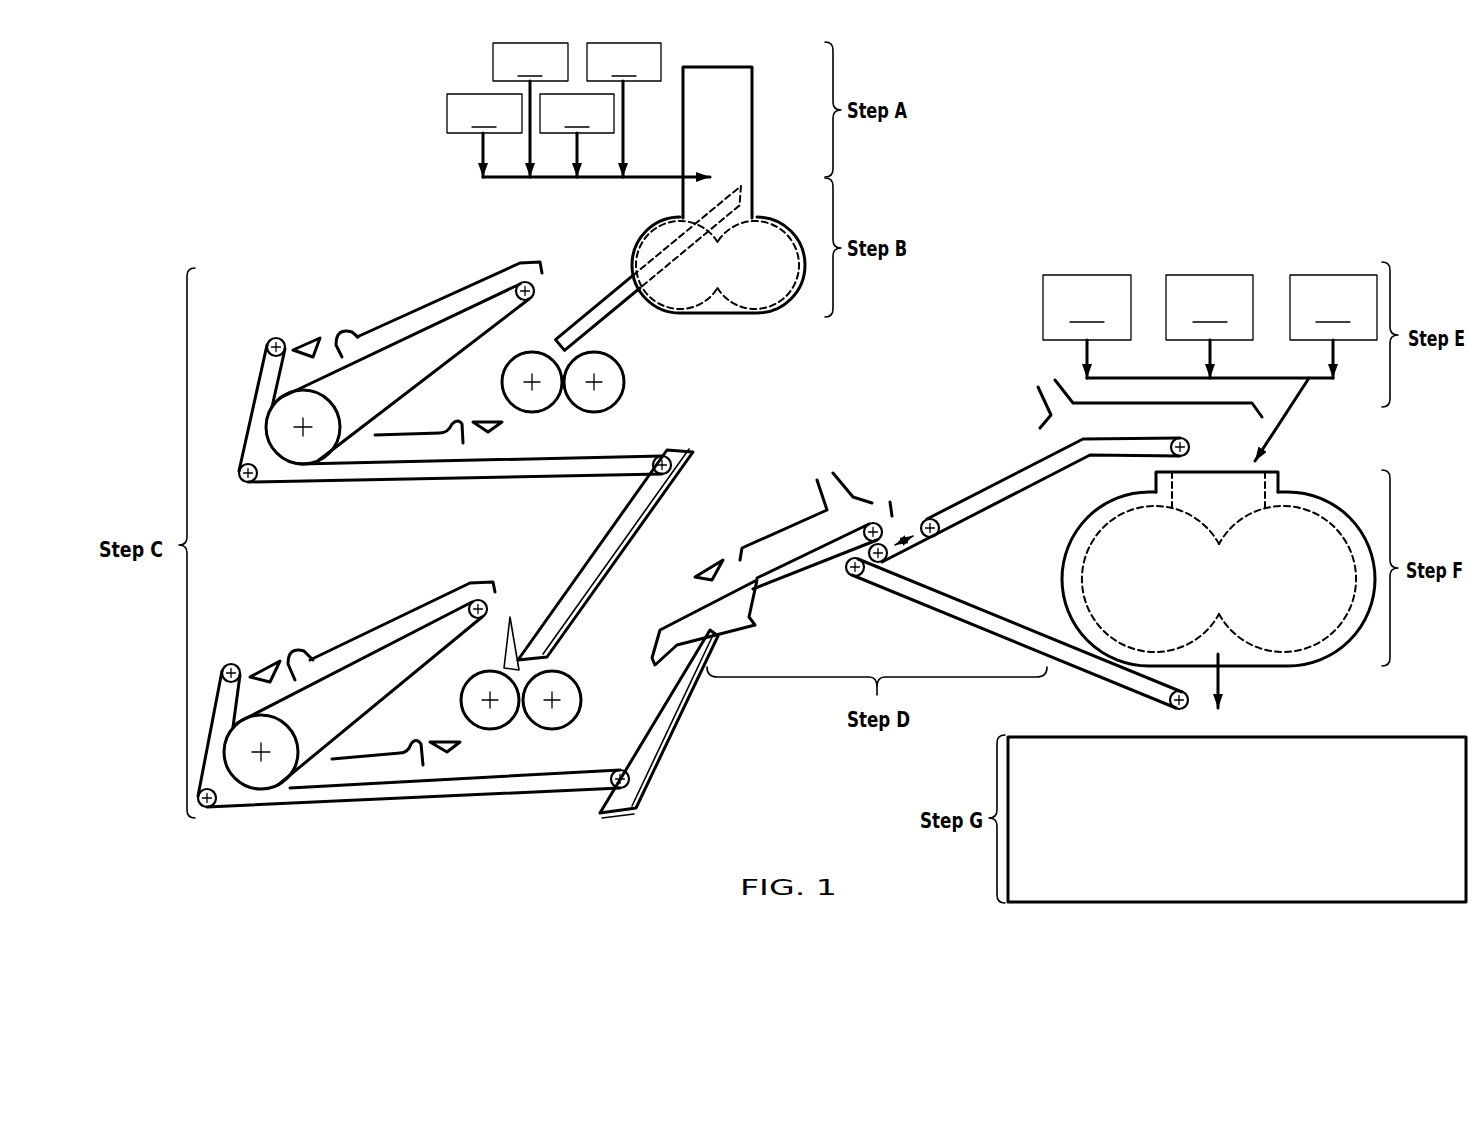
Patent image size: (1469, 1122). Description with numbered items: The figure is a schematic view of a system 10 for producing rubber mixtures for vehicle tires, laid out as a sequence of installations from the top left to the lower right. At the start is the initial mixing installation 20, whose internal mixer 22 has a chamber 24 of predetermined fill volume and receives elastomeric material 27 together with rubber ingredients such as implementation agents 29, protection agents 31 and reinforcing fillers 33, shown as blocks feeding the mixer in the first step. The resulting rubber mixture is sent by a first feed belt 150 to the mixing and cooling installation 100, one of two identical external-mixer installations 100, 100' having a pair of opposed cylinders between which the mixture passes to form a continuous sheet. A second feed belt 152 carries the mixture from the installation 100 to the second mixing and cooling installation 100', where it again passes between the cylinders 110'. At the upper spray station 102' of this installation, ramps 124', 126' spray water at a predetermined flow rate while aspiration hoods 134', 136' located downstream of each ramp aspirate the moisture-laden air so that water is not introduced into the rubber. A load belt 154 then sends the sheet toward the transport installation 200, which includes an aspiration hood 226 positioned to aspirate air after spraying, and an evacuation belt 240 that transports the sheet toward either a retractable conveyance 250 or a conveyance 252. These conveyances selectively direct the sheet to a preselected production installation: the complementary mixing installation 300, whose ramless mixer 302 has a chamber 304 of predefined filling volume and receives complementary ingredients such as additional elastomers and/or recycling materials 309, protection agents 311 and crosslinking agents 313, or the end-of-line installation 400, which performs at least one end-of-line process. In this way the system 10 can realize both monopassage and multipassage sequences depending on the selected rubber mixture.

The system 10 is at (978, 215).
The initial mixing installation 20 is at (518, 198).
The internal mixer 22 is at (730, 98).
The chamber 24 is at (775, 250).
The elastomeric material 27 is at (624, 110).
The implementation agents 29 is at (530, 110).
The protection agents 31 is at (484, 135).
The reinforcing fillers 33 is at (577, 135).
The mixing and cooling installation 100 is at (455, 417).
The mixing and cooling installation 100' is at (413, 720).
The upper spray station 102' is at (413, 666).
The cylinders 110' is at (521, 658).
The ramp 124' is at (253, 634).
The ramp 126' is at (441, 712).
The aspiration hood 134' is at (315, 626).
The aspiration hood 136' is at (365, 801).
The first feed belt 150 is at (630, 278).
The second feed belt 152 is at (588, 583).
The load belt 154 is at (658, 728).
The transport installation 200 is at (957, 530).
The aspiration hood 226 is at (807, 512).
The evacuation belt 240 is at (777, 590).
The retractable conveyance 250 is at (1008, 477).
The conveyance 252 is at (913, 603).
The complementary mixing installation 300 is at (1246, 491).
The ramless mixer 302 is at (1284, 483).
The chamber 304 is at (1200, 592).
The additional elastomers and/or recycling materials 309 is at (1087, 326).
The protection agents 311 is at (1209, 326).
The crosslinking agents 313 is at (1333, 326).
The end-of-line installation 400 is at (1211, 831).